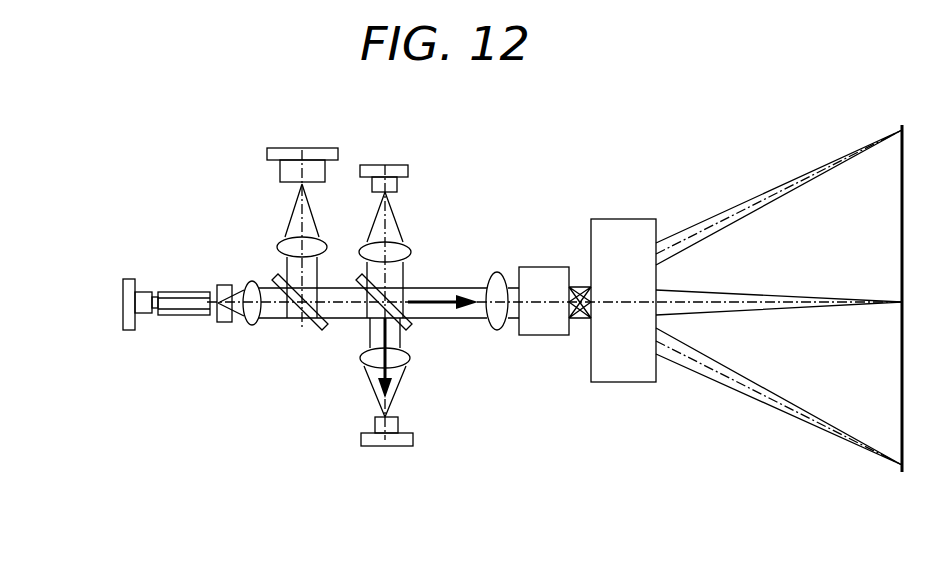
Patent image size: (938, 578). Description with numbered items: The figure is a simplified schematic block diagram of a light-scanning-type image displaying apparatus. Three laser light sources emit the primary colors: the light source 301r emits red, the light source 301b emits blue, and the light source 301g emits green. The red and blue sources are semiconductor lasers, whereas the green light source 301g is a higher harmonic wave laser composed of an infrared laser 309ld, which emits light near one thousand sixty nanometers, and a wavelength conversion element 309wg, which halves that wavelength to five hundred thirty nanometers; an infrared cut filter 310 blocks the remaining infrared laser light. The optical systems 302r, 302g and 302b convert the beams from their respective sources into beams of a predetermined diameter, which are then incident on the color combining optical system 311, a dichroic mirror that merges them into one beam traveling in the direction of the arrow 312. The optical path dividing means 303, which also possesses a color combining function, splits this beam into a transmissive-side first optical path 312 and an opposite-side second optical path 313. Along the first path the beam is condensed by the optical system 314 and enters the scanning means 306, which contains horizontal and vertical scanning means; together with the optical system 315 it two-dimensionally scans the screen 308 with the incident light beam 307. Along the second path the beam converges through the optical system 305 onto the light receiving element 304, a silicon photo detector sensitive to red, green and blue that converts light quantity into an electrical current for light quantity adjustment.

The light source 301g is at (148, 207).
The light source 301b is at (283, 152).
The light source 301r is at (398, 184).
The wavelength conversion element 309wg is at (177, 291).
The infrared laser 309ld is at (145, 313).
The infrared cut filter 310 is at (226, 323).
The optical system 302g is at (251, 283).
The optical system 302b is at (282, 244).
The optical system 302r is at (405, 249).
The color combining optical system 311 is at (345, 335).
The optical path dividing means 303 is at (393, 292).
The first optical path 312 is at (443, 308).
The second optical path 313 is at (378, 395).
The optical system 305 is at (410, 360).
The light receiving element 304 is at (398, 425).
The optical system 314 is at (500, 327).
The scanning means 306 is at (548, 267).
The optical system 315 is at (623, 227).
The incident light beam 307 is at (720, 227).
The screen 308 is at (905, 437).